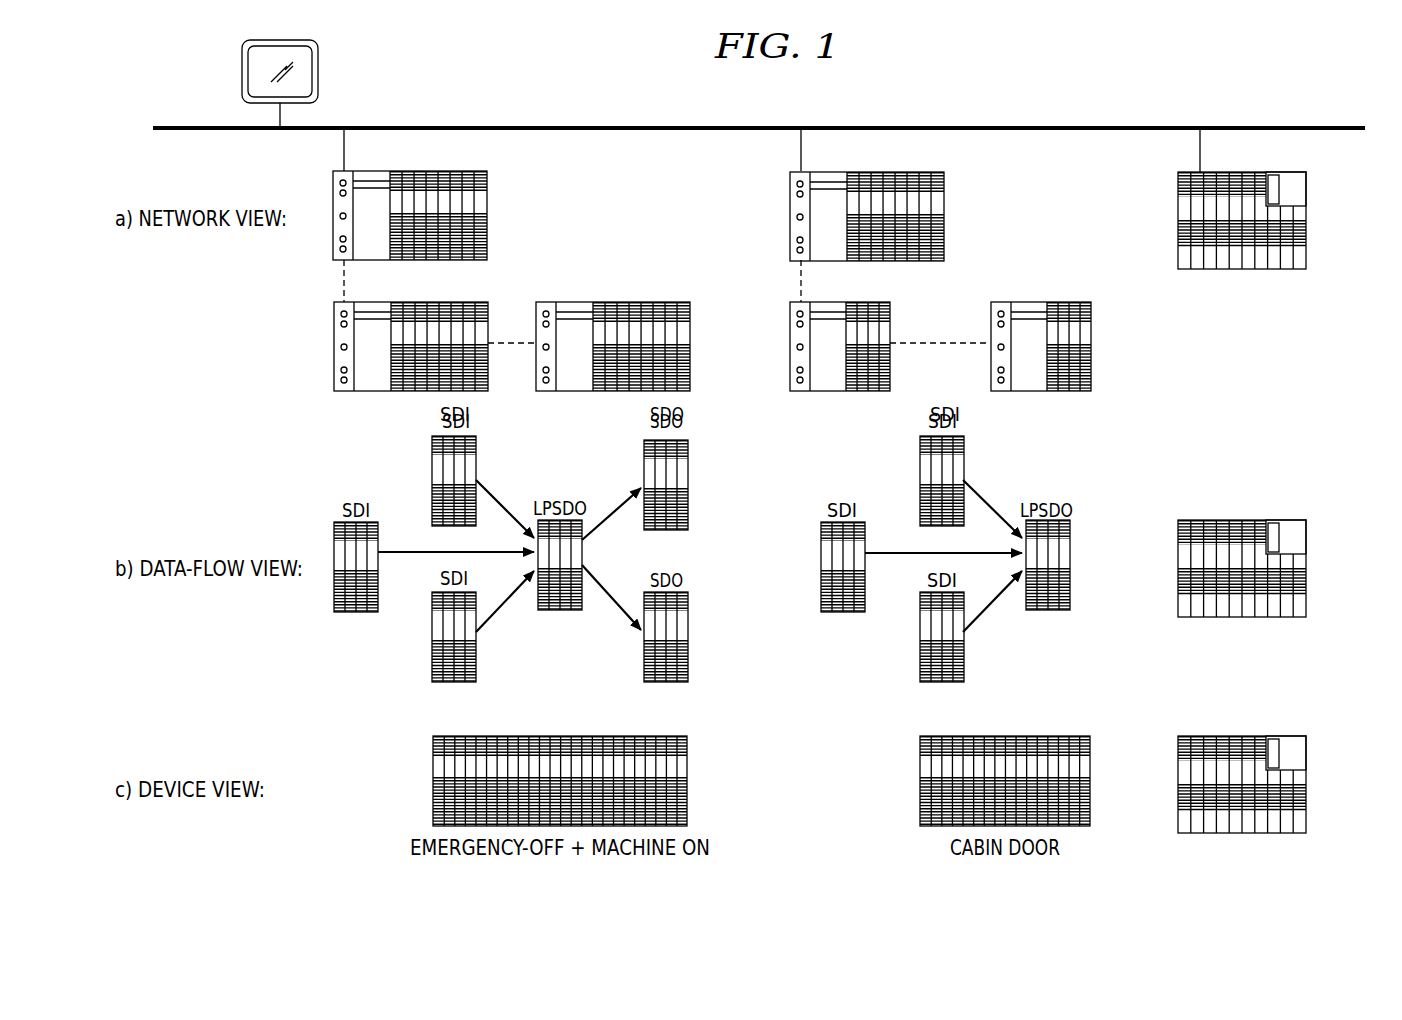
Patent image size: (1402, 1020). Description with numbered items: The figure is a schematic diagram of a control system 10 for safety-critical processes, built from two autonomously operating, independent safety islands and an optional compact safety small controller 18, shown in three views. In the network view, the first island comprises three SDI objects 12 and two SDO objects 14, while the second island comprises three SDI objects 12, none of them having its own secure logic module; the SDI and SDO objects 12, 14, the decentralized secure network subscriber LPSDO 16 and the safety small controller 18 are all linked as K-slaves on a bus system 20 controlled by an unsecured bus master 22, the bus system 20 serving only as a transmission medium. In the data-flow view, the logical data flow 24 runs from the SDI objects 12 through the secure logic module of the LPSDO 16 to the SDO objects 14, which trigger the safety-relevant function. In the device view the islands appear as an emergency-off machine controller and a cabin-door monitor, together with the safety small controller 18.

The control system 10 is at (960, 92).
The SDI object 12 is at (488, 218).
The SDO object 14 is at (410, 391).
The decentralized, secure network subscriber LPSDO 16 is at (418, 171).
The safety small controller 18 is at (1306, 222).
The bus system 20 is at (1274, 126).
The bus master 22 is at (319, 74).
The logical data flow 24 is at (405, 553).